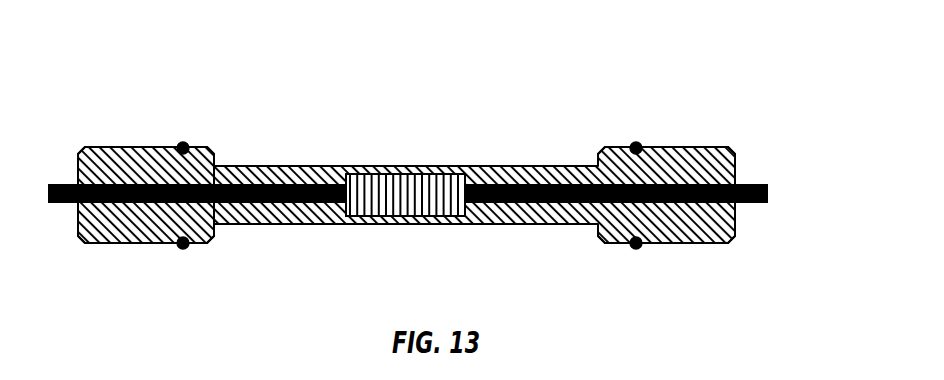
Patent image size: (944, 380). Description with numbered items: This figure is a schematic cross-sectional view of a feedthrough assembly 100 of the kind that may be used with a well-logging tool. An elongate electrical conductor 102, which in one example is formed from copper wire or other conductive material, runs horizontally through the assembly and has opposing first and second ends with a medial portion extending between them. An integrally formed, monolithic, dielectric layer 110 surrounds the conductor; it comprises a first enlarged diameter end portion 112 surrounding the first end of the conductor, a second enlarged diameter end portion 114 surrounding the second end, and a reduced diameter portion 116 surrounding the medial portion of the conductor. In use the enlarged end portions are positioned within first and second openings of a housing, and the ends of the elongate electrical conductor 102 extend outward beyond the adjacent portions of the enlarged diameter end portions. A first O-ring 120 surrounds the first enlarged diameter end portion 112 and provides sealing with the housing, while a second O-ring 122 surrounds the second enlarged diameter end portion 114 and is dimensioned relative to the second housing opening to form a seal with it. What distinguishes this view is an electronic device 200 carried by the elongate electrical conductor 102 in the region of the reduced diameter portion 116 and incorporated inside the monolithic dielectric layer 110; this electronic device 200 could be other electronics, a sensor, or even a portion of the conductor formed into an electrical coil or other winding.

The feedthrough assembly 100 is at (448, 176).
The elongate electrical conductor 102 is at (768, 193).
The integrally formed, monolithic, dielectric layer 110 is at (286, 140).
The first enlarged diameter end portion 112 is at (102, 160).
The second enlarged diameter end portion 114 is at (713, 165).
The reduced diameter portion 116 is at (245, 225).
The first O-ring 120 is at (183, 148).
The second O-ring 122 is at (636, 148).
The electronic device 200 is at (453, 216).